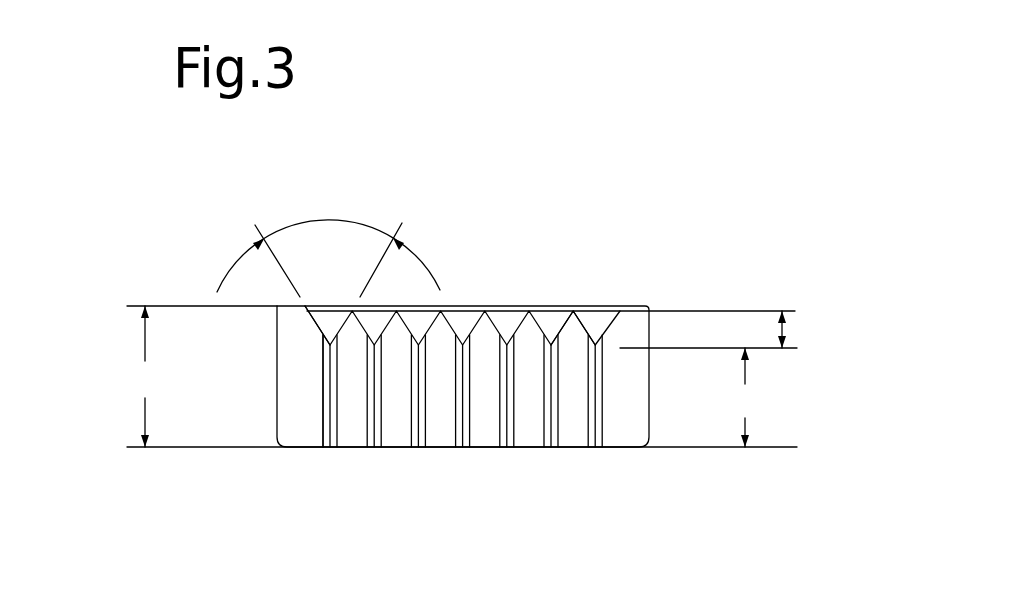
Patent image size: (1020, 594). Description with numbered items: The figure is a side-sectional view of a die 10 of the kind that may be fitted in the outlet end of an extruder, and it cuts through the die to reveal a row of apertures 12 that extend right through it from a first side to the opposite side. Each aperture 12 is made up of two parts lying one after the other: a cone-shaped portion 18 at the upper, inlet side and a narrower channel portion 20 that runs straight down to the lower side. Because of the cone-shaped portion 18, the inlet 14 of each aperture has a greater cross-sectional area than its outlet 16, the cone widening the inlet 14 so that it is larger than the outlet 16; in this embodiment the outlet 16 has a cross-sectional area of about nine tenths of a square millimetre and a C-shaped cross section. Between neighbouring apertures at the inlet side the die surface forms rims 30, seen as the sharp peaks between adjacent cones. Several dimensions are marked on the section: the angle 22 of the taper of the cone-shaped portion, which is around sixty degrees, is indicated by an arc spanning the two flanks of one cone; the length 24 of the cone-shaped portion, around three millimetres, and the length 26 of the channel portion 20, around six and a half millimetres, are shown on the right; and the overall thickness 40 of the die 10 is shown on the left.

The die 10 is at (637, 257).
The apertures 12 is at (558, 413).
The inlet 14 is at (541, 305).
The outlet 16 is at (548, 448).
The cone-shaped portion 18 is at (316, 323).
The channel portion 20 is at (323, 405).
The angle of the taper 22 is at (285, 273).
The length of the cone-shaped portion 24 is at (785, 328).
The length of the channel portion 26 is at (744, 397).
The rims 30 is at (573, 309).
The thickness 40 is at (461, 376).